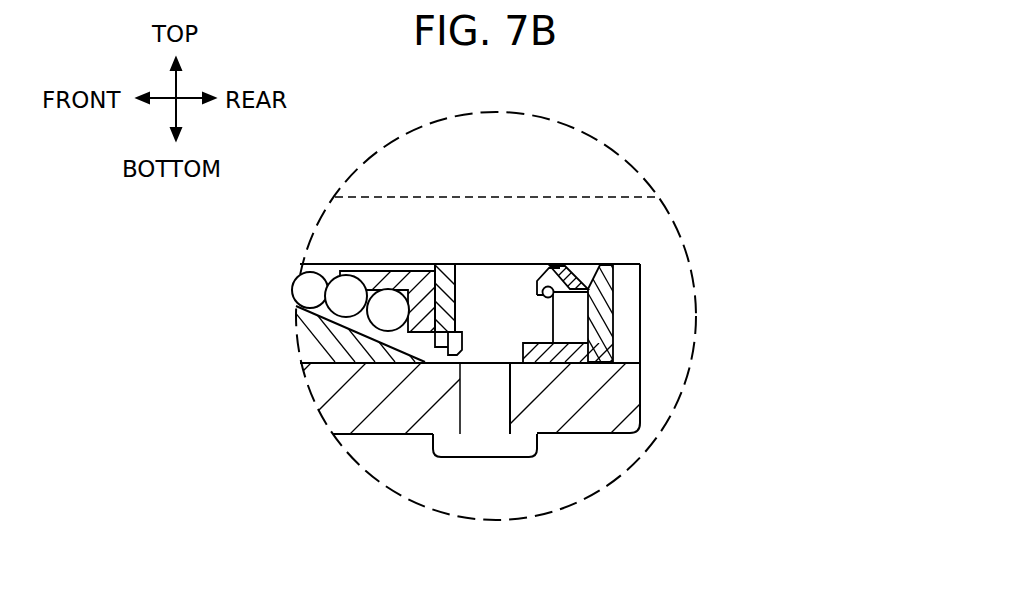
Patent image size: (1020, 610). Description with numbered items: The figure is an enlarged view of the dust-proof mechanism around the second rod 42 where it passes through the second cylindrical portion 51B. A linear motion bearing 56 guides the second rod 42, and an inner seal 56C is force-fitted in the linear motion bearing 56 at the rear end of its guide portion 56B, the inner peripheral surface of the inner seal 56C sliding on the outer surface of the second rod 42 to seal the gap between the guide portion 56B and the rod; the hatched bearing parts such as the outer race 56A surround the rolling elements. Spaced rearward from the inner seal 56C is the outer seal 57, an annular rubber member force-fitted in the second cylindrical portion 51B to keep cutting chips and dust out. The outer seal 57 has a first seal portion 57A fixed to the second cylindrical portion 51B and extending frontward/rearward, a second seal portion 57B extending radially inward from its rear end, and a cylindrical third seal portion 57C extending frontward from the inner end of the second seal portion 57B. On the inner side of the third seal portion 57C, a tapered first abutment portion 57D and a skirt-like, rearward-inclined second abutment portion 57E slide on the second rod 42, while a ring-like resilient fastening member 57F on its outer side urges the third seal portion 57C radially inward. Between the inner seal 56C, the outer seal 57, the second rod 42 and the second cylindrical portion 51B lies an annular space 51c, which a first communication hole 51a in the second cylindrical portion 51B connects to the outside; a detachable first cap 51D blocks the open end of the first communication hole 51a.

The second rod 42 is at (383, 215).
The second cylindrical portion 51B is at (353, 400).
The first cap 51D is at (500, 457).
The first communication hole 51a is at (465, 400).
The annular space 51c is at (493, 308).
The linear motion bearing 56 is at (296, 387).
The outer ring 56A is at (345, 297).
The guide portion 56B is at (337, 343).
The inner seal 56C is at (433, 340).
The outer seal 57 is at (676, 311).
The first seal portion 57A is at (551, 350).
The second seal portion 57B is at (603, 322).
The third seal portion 57C is at (572, 285).
The first abutment portion 57D is at (548, 286).
The second abutment portion 57E is at (600, 285).
The fastening member 57F is at (548, 295).